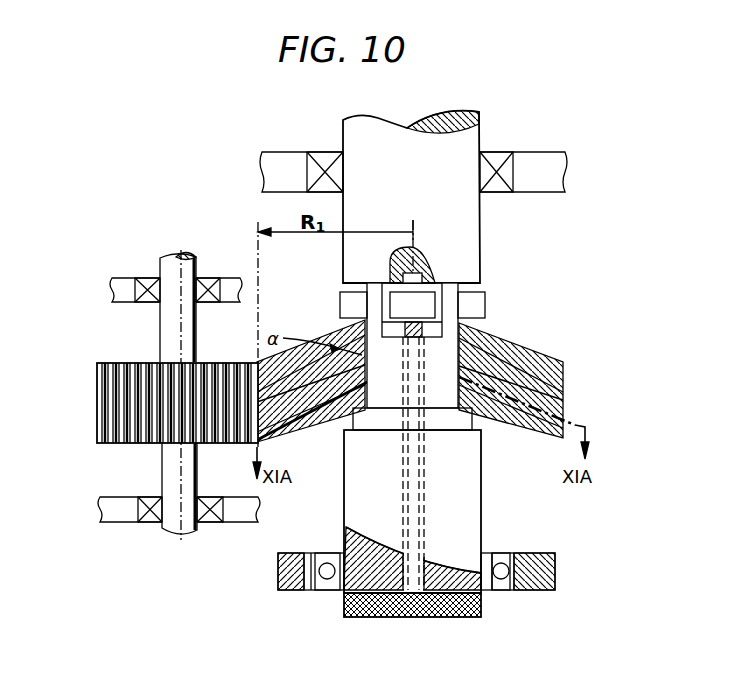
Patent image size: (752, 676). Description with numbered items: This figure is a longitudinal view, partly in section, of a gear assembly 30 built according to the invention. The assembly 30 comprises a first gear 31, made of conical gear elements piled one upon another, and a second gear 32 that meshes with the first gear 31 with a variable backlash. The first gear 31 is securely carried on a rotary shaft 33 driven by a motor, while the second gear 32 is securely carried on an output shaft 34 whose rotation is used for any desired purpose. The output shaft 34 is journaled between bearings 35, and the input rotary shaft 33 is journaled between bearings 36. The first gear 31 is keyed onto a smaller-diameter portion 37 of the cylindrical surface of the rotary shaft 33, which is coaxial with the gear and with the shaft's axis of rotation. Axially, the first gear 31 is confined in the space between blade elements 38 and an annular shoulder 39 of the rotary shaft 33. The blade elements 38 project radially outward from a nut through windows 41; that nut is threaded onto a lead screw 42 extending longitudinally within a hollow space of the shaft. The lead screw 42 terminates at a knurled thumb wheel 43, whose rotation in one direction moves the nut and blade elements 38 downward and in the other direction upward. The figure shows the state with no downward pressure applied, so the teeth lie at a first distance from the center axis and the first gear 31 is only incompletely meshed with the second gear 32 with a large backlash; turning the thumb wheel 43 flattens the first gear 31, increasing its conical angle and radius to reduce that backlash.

The gear assembly 30 is at (575, 153).
The first gear 31 is at (572, 391).
The second gear 32 is at (111, 445).
The rotary shaft 33 is at (481, 216).
The output shaft 34 is at (175, 257).
The bearings 35 is at (121, 282).
The bearings 36 is at (325, 158).
The portion of the cylindrical surface 37 is at (375, 406).
The blade elements 38 is at (484, 300).
The annular shoulder 39 is at (470, 418).
The windows 41 is at (442, 330).
The lead screw 42 is at (425, 500).
The thumb wheel 43 is at (345, 605).